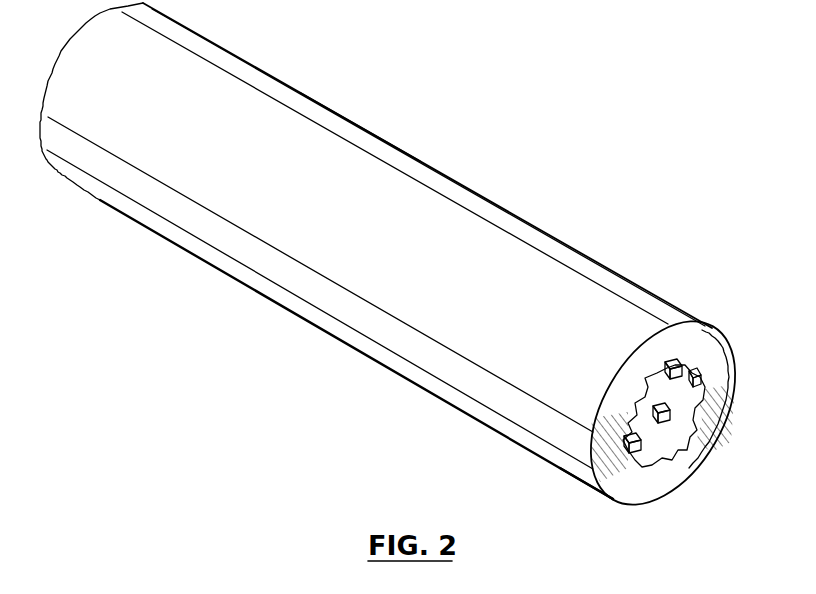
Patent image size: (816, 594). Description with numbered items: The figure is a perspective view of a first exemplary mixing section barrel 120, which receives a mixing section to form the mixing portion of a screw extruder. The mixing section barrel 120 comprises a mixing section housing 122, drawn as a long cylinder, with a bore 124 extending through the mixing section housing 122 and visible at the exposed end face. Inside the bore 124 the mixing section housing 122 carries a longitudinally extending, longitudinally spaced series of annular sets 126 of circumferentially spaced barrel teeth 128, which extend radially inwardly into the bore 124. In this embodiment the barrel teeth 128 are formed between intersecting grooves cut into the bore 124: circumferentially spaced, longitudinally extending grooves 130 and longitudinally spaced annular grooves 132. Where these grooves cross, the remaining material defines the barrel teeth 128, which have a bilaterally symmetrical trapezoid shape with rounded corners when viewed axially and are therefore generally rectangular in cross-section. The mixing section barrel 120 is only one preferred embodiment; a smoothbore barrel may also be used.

The mixing section barrel 120 is at (602, 165).
The mixing section housing 122 is at (337, 108).
The bore 124 is at (675, 443).
The annular sets 126 is at (606, 503).
The barrel teeth 128 is at (677, 360).
The longitudinally extending grooves 130 is at (657, 440).
The annular grooves 132 is at (653, 413).